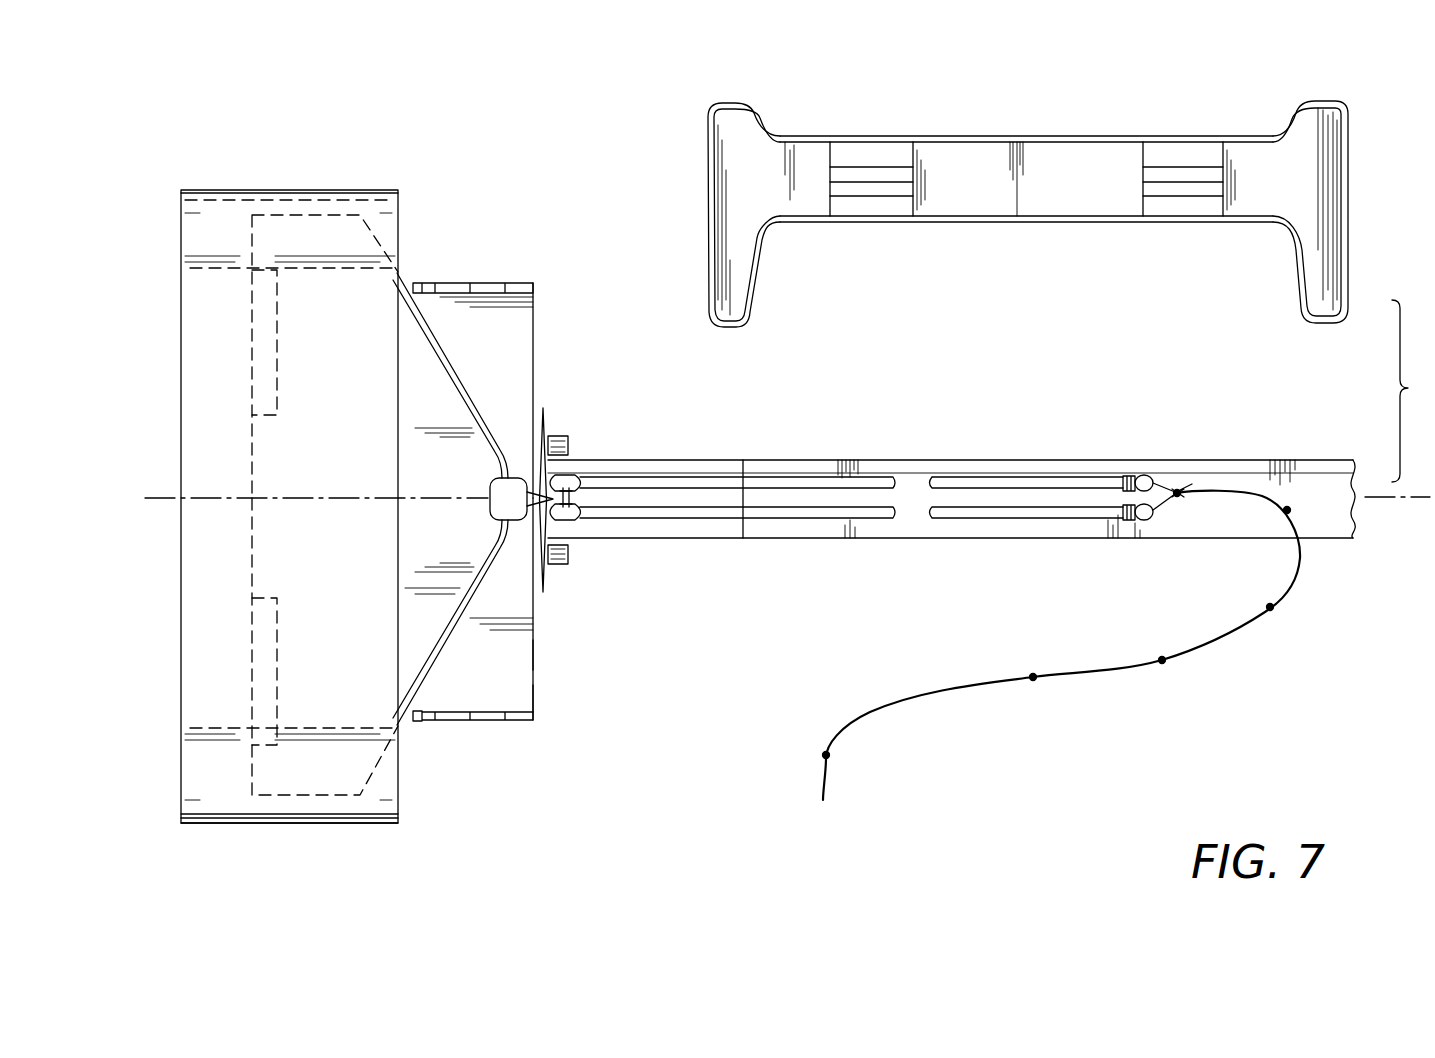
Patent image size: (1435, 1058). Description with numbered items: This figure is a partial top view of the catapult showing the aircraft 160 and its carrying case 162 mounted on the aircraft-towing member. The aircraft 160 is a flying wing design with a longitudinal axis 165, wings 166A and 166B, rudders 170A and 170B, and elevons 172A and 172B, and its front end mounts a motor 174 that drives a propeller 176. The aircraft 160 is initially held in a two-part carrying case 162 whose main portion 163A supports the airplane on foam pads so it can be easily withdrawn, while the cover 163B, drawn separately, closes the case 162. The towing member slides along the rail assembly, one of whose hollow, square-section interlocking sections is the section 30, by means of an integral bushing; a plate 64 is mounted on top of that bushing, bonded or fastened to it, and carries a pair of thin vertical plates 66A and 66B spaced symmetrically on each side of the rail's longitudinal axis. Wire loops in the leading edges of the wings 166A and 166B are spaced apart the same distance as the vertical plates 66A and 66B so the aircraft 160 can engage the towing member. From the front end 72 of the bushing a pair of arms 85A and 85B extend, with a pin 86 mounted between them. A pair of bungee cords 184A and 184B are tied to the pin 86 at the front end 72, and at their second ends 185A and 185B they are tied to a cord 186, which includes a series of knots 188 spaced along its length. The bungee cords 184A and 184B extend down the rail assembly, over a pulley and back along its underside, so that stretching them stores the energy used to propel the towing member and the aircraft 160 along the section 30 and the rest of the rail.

The section 30 is at (708, 543).
The plate 64 is at (536, 697).
The vertical plate 66A is at (521, 722).
The vertical plate 66B is at (533, 282).
The front end of the bushing 72 is at (536, 657).
The arm 85A is at (578, 458).
The arm 85B is at (574, 548).
The pin 86 is at (585, 495).
The aircraft 160 is at (455, 360).
The carrying case 162 is at (196, 828).
The main portion 163A is at (378, 826).
The cover 163B is at (1017, 225).
The longitudinal axis 165 is at (178, 494).
The wing 166A is at (430, 682).
The wing 166B is at (425, 318).
The rudder 170A is at (293, 800).
The rudder 170B is at (291, 212).
The elevon 172A is at (252, 677).
The elevon 172B is at (252, 340).
The motor 174 is at (518, 477).
The propeller 176 is at (544, 420).
The bungee cord 184A is at (598, 520).
The bungee cord 184B is at (600, 480).
The second end 185A is at (1128, 521).
The second end 185B is at (1127, 476).
The cord 186 is at (823, 792).
The knots 188 is at (1272, 609).